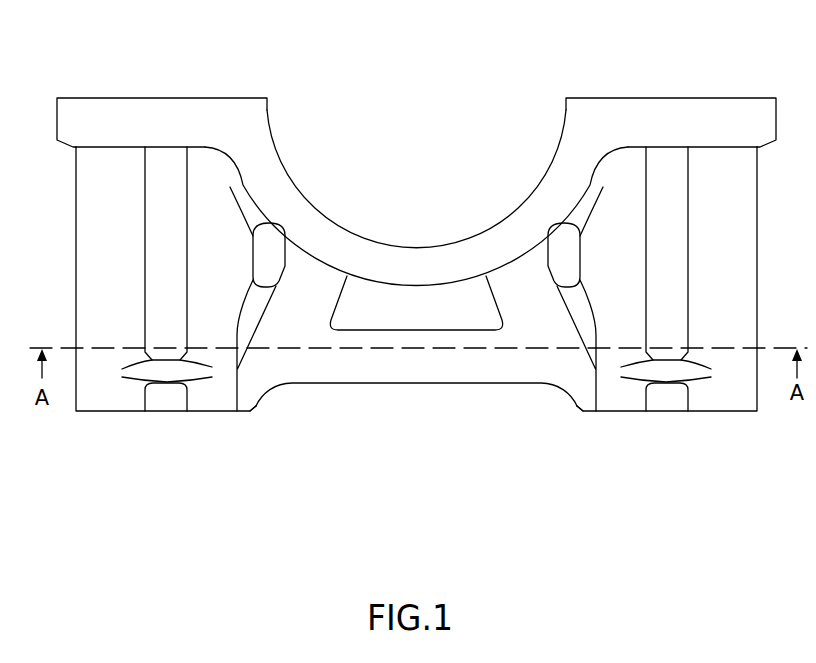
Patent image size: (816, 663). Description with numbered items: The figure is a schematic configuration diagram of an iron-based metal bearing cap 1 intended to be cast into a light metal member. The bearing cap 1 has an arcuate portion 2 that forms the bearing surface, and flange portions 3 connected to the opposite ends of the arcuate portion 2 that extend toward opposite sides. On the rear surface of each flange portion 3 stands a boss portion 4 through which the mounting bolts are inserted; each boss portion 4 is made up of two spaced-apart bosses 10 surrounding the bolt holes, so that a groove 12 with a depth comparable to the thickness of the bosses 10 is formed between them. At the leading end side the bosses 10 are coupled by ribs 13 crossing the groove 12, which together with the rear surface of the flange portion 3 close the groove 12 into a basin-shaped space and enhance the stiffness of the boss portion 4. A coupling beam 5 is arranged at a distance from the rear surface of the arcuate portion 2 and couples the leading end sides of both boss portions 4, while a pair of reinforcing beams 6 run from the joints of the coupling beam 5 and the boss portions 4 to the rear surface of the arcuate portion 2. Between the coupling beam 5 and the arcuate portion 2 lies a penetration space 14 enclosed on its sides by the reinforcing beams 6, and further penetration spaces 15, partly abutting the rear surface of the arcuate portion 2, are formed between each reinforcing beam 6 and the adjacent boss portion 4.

The bearing cap 1 is at (483, 97).
The arcuate portion 2 is at (400, 266).
The flange portion 3 is at (179, 107).
The boss portion 4 is at (243, 426).
The coupling beam 5 is at (415, 373).
The reinforcing beam 6 is at (310, 287).
The boss 10 is at (102, 398).
The groove 12 is at (163, 248).
The rib 13 is at (170, 377).
The penetration space 14 is at (397, 322).
The penetration space 15 is at (269, 233).